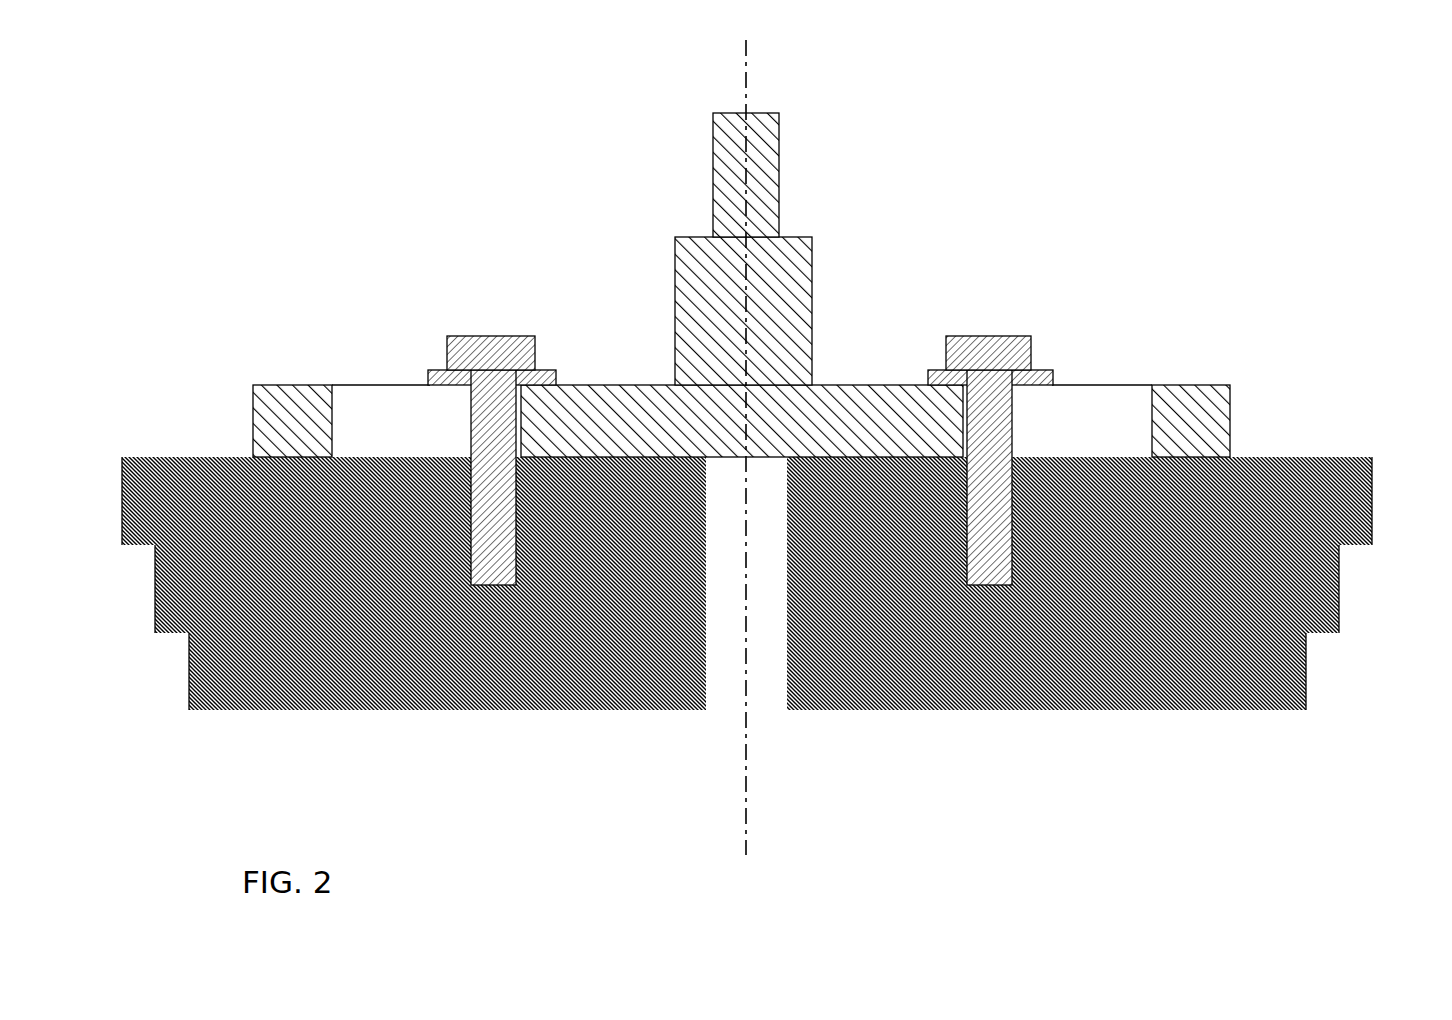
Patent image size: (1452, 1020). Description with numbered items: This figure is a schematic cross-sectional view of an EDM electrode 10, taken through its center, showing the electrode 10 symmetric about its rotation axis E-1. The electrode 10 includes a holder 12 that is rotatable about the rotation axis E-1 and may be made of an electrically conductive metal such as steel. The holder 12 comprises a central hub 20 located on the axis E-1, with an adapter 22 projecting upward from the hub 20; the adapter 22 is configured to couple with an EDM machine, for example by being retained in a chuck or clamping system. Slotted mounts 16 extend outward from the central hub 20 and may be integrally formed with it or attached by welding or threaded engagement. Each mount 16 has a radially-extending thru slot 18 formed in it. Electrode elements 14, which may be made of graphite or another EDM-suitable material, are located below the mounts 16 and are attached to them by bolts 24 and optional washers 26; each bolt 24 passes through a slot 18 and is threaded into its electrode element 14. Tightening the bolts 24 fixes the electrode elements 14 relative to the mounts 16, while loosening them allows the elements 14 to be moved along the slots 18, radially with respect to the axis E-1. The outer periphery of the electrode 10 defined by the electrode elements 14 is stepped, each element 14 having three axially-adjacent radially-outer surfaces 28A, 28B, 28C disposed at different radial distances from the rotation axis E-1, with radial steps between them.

The EDM electrode 10 is at (271, 87).
The holder 12 is at (574, 287).
The electrode elements 14 is at (343, 592).
The slotted mounts 16 is at (300, 384).
The radially-extending thru slot 18 is at (337, 402).
The central hub 20 is at (787, 288).
The adapter 22 is at (767, 157).
The bolts 24 is at (490, 333).
The washers 26 is at (1056, 383).
The radially-outer surface 28A is at (122, 500).
The radially-outer surface 28B is at (155, 588).
The radially-outer surface 28C is at (189, 663).
The rotation axis E-1 is at (755, 73).